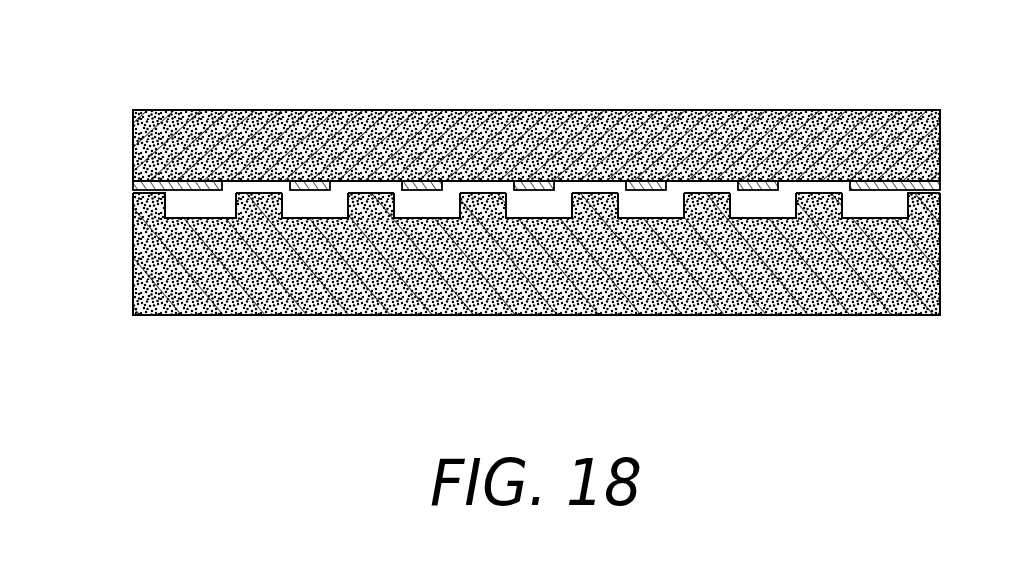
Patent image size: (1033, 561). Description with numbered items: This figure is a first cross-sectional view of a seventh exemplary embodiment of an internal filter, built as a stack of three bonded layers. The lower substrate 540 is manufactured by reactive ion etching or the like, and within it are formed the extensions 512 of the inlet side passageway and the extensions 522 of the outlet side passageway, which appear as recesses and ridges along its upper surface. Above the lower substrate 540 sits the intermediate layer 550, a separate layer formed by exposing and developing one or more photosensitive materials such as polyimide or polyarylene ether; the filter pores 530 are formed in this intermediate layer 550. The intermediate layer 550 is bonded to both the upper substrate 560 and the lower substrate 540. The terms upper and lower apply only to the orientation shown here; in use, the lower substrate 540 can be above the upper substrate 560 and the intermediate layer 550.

The upper substrate 560 is at (132, 135).
The intermediate layer 550 is at (133, 185).
The lower substrate 540 is at (133, 267).
The filter pores 530 is at (536, 90).
The extensions of the inlet side passageway 512 is at (536, 301).
The extensions of the outlet side passageway 522 is at (627, 315).